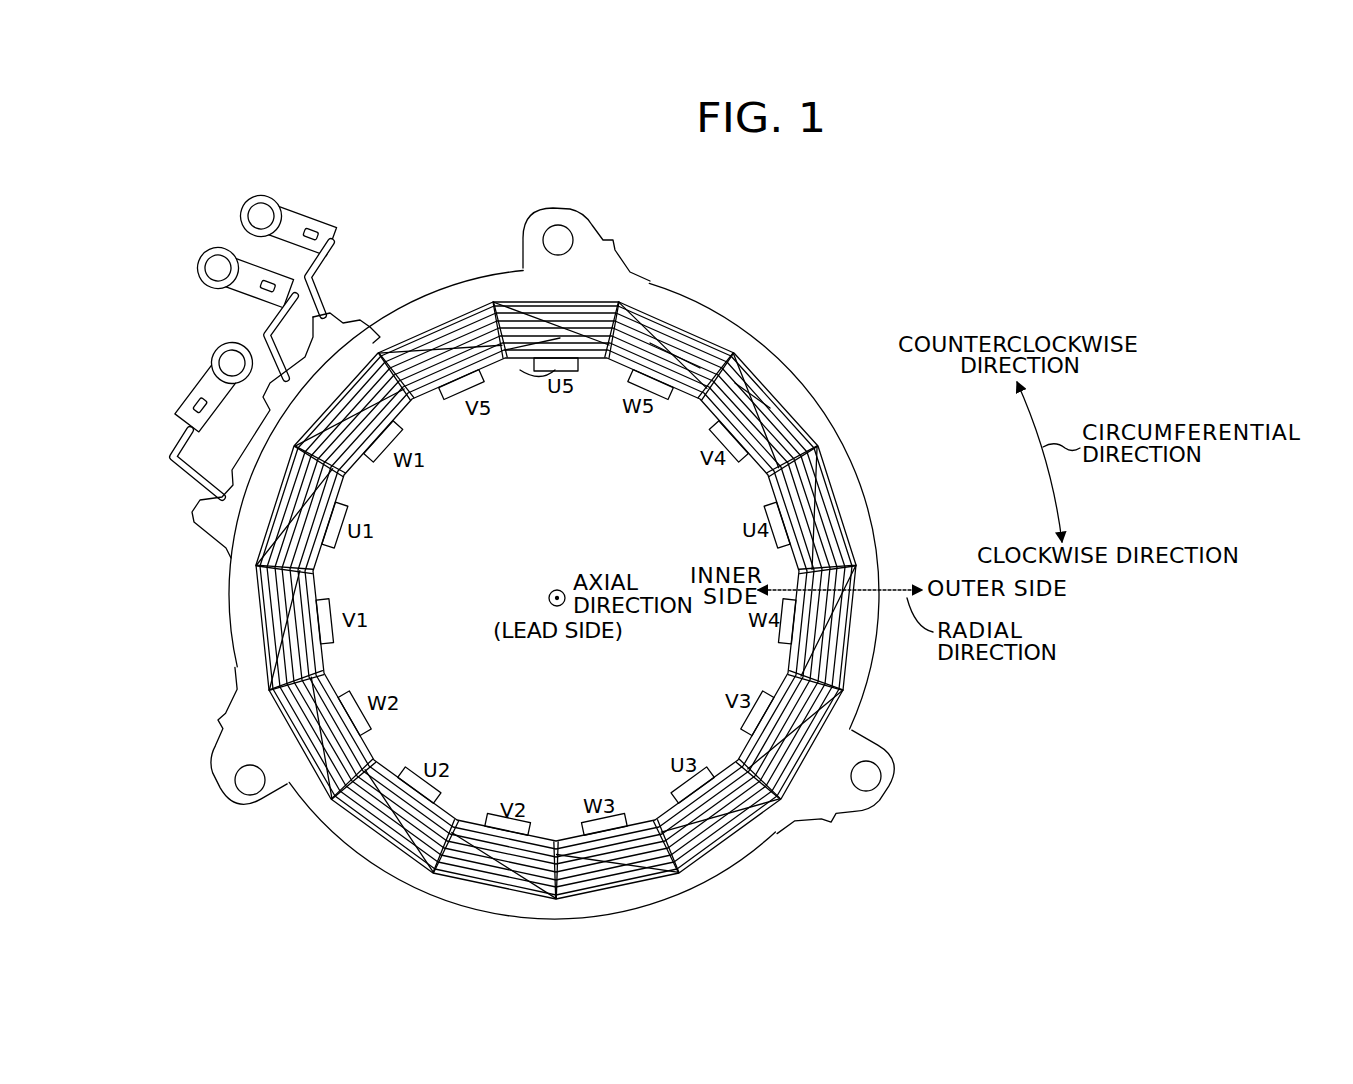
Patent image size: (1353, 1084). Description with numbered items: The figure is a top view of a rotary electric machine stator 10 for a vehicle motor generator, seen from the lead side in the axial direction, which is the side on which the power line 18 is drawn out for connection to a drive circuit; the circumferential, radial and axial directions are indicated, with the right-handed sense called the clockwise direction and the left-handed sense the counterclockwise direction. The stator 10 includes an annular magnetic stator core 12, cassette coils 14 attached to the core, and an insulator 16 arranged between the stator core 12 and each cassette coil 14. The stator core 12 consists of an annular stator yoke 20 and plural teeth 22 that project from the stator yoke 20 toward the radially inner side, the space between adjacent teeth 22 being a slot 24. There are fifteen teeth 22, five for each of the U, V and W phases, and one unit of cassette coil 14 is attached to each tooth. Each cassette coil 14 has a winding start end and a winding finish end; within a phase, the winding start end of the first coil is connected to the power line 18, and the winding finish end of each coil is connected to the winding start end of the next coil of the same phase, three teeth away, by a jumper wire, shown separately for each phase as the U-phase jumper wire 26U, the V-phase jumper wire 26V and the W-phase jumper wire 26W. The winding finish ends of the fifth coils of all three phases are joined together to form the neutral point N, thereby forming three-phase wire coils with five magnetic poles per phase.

The rotary electric machine stator 10 is at (878, 290).
The stator core 12 is at (932, 437).
The cassette coil 14 is at (847, 540).
The insulator 16 is at (840, 513).
The power line 18 is at (175, 187).
The stator yoke 20 is at (853, 488).
The teeth 22 is at (817, 463).
The slot 24 is at (807, 433).
The U-phase jumper wire 26U is at (693, 367).
The V-phase jumper wire 26V is at (648, 357).
The W-phase jumper wire 26W is at (760, 397).
The neutral point N is at (530, 370).